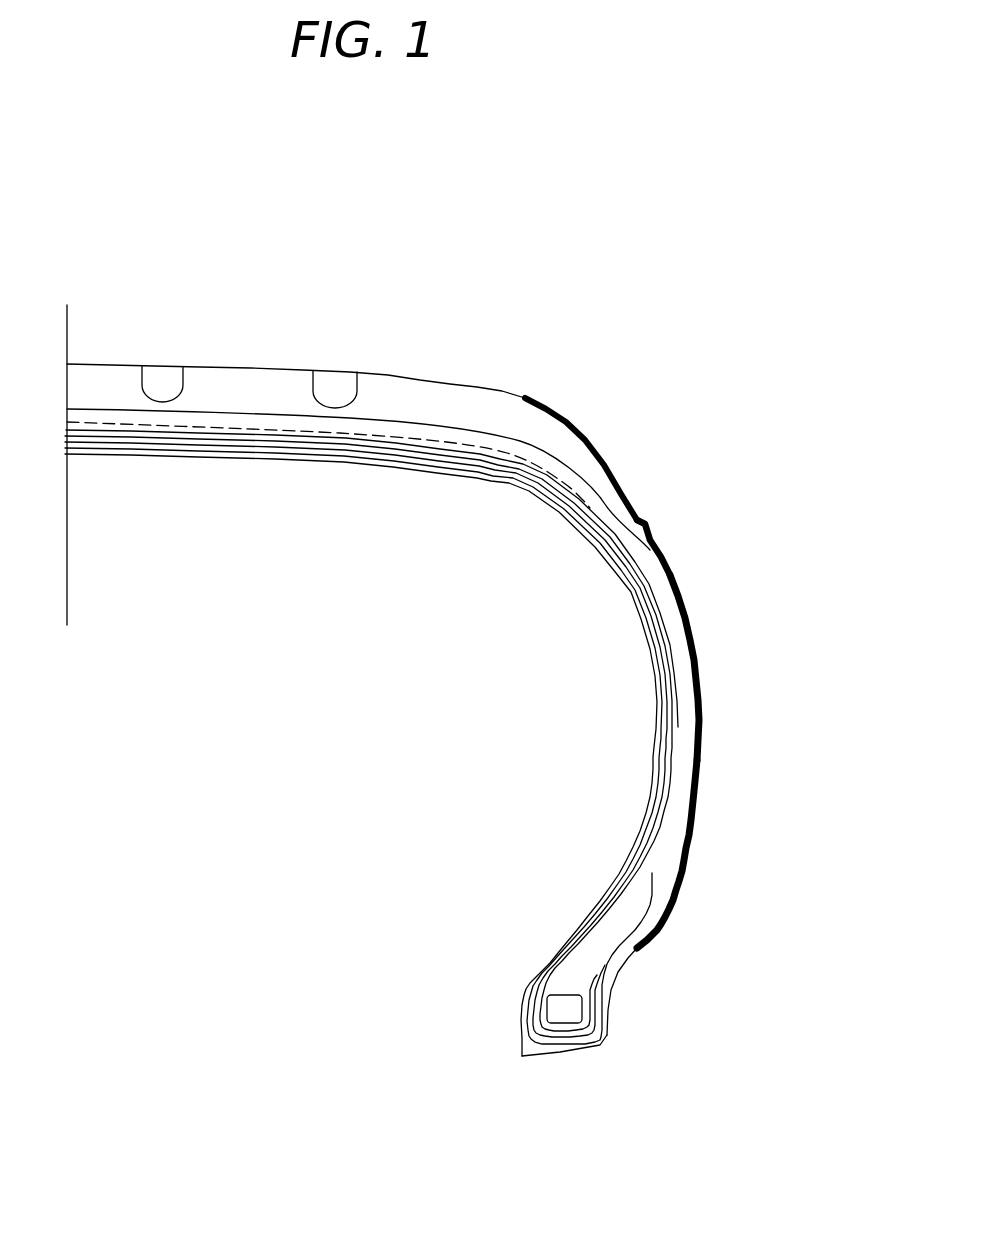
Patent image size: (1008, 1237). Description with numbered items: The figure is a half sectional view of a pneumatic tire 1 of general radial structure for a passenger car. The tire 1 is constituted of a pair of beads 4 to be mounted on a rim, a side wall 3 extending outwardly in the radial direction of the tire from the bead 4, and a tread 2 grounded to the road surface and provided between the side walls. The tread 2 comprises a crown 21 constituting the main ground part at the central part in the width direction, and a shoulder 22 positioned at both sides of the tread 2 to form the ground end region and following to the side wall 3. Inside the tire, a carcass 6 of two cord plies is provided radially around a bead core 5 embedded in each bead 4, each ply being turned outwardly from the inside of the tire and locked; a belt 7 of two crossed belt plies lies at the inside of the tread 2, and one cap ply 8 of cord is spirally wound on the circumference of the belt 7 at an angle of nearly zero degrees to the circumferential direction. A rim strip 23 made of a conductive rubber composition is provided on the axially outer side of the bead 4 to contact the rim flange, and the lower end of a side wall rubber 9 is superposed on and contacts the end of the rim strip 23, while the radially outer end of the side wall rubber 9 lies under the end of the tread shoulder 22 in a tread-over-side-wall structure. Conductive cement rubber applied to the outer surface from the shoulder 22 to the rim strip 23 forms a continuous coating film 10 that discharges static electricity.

The pneumatic tire 1 is at (353, 247).
The tread 2 is at (227, 353).
The crown 21 is at (253, 398).
The shoulder 22 is at (546, 433).
The cap ply 8 is at (400, 437).
The belt 7 is at (278, 443).
The coating film 10 is at (632, 512).
The side wall rubber 9 is at (687, 667).
The side wall 3 is at (722, 727).
The carcass 6 is at (665, 653).
The bead core 5 is at (557, 1012).
The rim strip 23 is at (628, 947).
The bead 4 is at (666, 962).